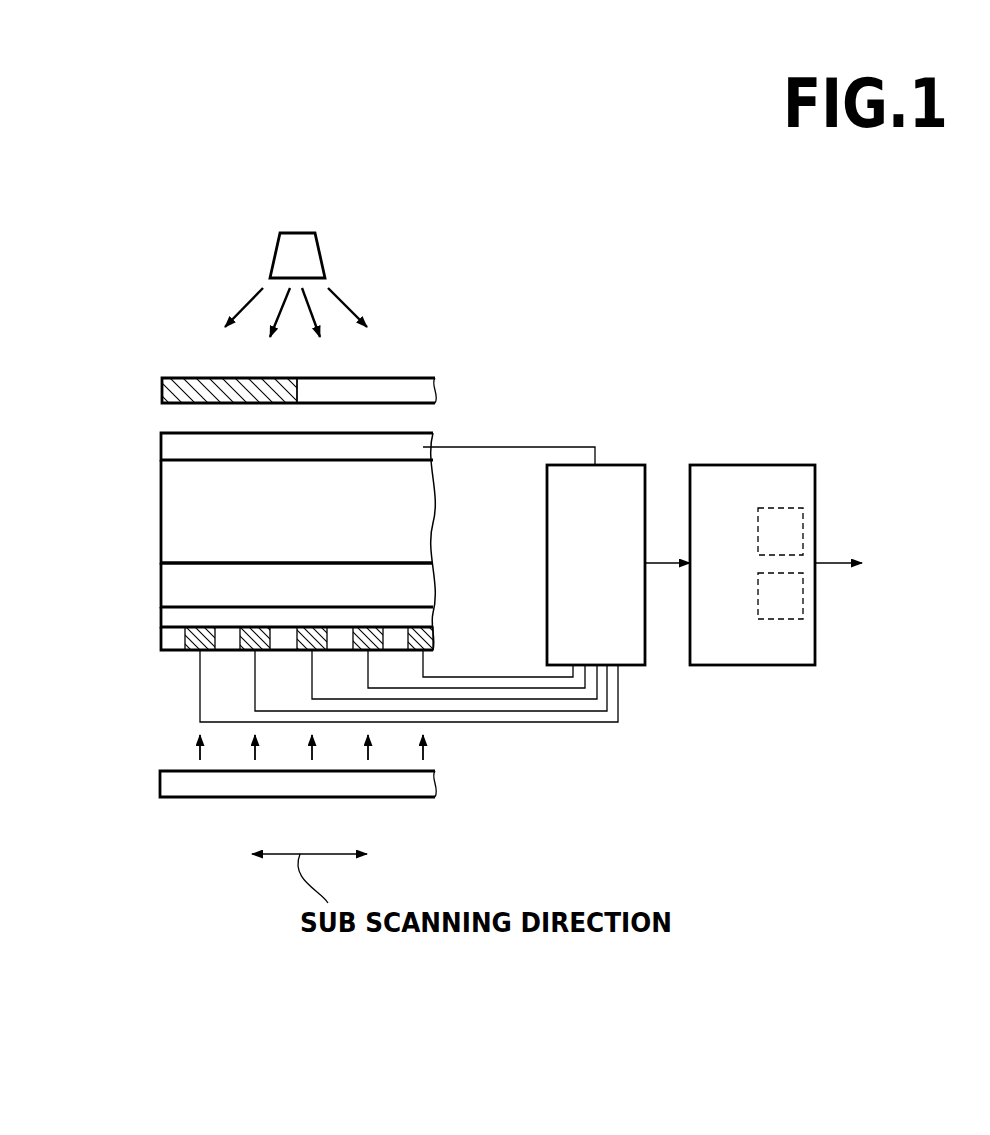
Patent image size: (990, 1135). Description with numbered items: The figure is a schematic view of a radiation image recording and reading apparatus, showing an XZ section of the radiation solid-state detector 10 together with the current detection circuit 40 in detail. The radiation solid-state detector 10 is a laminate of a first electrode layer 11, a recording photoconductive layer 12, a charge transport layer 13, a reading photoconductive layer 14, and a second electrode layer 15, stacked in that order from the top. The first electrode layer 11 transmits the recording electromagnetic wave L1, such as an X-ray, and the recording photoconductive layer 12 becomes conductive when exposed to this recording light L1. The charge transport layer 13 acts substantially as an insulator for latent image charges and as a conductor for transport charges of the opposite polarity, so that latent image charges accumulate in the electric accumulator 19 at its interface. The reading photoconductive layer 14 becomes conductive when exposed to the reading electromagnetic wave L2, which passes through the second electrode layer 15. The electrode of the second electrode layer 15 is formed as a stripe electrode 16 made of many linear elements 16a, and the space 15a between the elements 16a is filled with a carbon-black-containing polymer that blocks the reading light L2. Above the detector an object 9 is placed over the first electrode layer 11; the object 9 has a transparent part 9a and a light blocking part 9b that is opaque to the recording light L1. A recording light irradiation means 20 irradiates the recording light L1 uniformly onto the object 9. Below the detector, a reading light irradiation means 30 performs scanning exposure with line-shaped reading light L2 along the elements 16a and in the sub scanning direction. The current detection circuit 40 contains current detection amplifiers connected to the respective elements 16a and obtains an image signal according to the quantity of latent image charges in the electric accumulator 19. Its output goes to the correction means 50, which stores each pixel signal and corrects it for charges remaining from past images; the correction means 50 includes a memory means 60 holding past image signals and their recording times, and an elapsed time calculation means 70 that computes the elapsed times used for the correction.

The object 9 is at (280, 353).
The transparent part 9a is at (413, 378).
The light blocking part 9b is at (160, 397).
The radiation solid-state detector 10 is at (233, 559).
The first electrode layer 11 is at (163, 445).
The recording photoconductive layer 12 is at (163, 482).
The charge transport layer 13 is at (165, 578).
The reading photoconductive layer 14 is at (165, 615).
The second electrode layer 15 is at (237, 630).
The space 15a is at (165, 645).
The stripe electrode 16 is at (193, 653).
The element 16a is at (242, 666).
The electric accumulator 19 is at (176, 556).
The recording light irradiation means 20 is at (313, 255).
The reading light irradiation means 30 is at (160, 785).
The current detection circuit 40 is at (617, 463).
The correction means 50 is at (774, 547).
The memory means 60 is at (795, 508).
The elapsed time calculation means 70 is at (785, 619).
The recording electromagnetic wave L1 is at (343, 297).
The electromagnetic wave for reading L2 is at (198, 756).